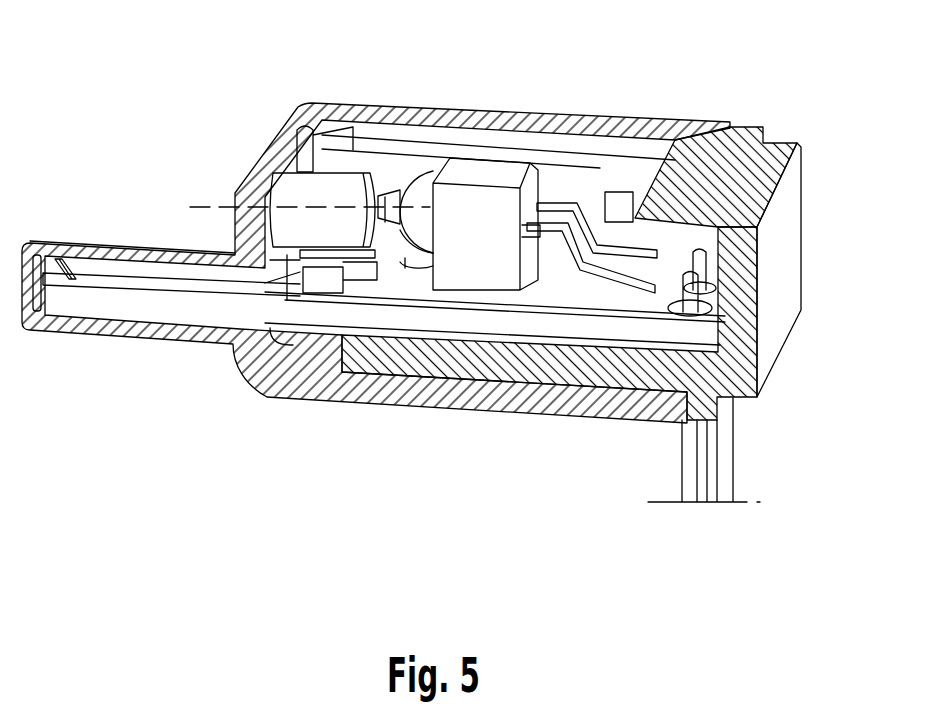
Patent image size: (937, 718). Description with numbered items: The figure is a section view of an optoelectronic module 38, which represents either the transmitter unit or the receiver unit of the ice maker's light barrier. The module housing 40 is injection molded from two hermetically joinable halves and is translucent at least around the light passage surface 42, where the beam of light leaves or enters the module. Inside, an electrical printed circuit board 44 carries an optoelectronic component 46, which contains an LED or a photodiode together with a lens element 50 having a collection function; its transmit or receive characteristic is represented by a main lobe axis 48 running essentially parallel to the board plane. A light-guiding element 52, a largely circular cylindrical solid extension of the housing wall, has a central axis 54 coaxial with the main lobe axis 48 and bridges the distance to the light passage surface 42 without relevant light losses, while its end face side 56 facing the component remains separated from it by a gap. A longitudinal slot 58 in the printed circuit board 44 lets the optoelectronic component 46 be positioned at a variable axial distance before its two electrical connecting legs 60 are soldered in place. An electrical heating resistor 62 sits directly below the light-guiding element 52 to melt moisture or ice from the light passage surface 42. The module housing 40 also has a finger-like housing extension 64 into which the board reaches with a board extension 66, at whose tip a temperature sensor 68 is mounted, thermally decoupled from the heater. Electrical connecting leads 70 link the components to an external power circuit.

The optoelectronic module 38 is at (786, 143).
The module housing 40 is at (780, 240).
The light passage surface 42 is at (233, 182).
The electrical printed circuit board 44 is at (531, 295).
The optoelectronic component 46 is at (489, 170).
The main lobe axis 48 is at (422, 213).
The lens element 50 is at (412, 233).
The light-guiding element 52 is at (312, 190).
The central axis 54 is at (313, 217).
The end face side 56 is at (377, 197).
The longitudinal slot 58 is at (416, 277).
The electrical connecting legs 60 is at (609, 293).
The electrical heating resistor 62 is at (393, 223).
The housing extension 64 is at (100, 243).
The board extension 66 is at (90, 303).
The temperature sensor 68 is at (58, 260).
The electrical connecting leads 70 is at (733, 455).